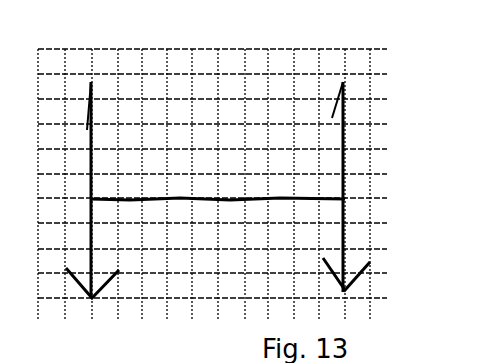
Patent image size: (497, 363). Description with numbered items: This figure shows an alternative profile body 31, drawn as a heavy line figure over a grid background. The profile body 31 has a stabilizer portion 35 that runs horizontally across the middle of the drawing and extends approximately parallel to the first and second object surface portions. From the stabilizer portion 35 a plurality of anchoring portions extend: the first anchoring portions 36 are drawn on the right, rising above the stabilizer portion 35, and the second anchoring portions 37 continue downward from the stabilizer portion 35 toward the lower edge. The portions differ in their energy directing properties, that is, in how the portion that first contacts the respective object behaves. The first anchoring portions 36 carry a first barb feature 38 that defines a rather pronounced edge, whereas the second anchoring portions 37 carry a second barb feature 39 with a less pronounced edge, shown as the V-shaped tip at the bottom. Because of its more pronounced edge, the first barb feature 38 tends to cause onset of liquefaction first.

The profile body 31 is at (389, 125).
The stabilizer portion 35 is at (229, 199).
The first anchoring portions 36 is at (344, 100).
The second anchoring portions 37 is at (346, 241).
The first barb feature 38 is at (105, 126).
The second barb feature 39 is at (348, 281).